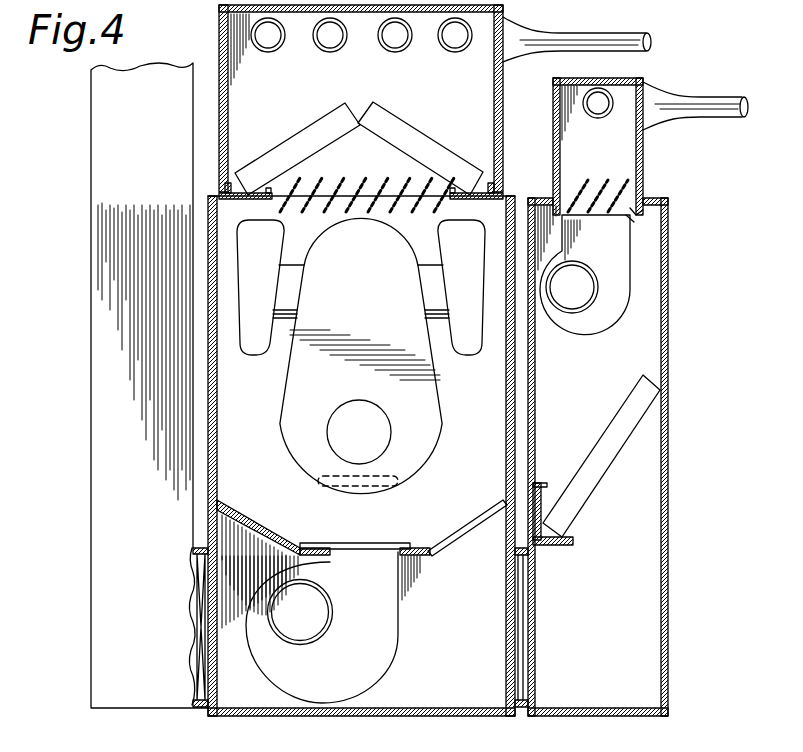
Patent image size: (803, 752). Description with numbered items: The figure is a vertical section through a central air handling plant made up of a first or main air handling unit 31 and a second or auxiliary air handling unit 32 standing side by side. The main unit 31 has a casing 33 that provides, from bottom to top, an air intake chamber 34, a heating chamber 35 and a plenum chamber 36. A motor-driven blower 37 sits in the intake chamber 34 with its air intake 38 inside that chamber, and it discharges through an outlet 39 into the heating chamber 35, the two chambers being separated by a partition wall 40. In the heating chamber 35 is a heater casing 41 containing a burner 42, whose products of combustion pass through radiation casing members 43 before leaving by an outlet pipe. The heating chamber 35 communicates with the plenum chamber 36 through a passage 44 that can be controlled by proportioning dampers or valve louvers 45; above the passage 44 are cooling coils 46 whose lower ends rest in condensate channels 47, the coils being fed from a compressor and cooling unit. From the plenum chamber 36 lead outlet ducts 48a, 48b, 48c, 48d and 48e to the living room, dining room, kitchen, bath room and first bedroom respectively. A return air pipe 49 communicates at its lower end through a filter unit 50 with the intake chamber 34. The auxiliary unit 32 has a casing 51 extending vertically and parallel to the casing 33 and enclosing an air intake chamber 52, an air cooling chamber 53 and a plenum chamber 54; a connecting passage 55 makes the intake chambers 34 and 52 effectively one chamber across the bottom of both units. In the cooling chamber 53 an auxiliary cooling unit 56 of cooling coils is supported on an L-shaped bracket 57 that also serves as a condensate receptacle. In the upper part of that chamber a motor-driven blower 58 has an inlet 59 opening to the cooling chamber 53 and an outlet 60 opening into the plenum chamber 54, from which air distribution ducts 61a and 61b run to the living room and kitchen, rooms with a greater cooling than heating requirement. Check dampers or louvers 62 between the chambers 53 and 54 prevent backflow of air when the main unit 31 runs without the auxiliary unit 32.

The main air handling unit 31 is at (421, 699).
The auxiliary air handling unit 32 is at (594, 716).
The casing 33 is at (215, 432).
The air intake chamber 34 is at (462, 614).
The heating chamber 35 is at (257, 413).
The plenum chamber 36 is at (380, 94).
The motor-driven blower 37 is at (385, 640).
The air intake 38 is at (298, 643).
The outlet 39 is at (358, 545).
The partition wall 40 is at (478, 532).
The heater casing 41 is at (428, 402).
The burner 42 is at (345, 487).
The radiation casing members 43 is at (248, 350).
The passage 44 is at (335, 210).
The proportioning dampers 45 is at (392, 184).
The cooling coils 46 is at (388, 125).
The condensate channels 47 is at (236, 198).
The outlet duct 48a is at (266, 53).
The outlet duct 48b is at (327, 53).
The outlet duct 48c is at (392, 53).
The outlet duct 48d is at (452, 53).
The outlet duct 48e is at (495, 46).
The return air pipe 49 is at (102, 520).
The filter unit 50 is at (205, 625).
The casing 51 is at (662, 517).
The air intake chamber 52 is at (615, 609).
The air cooling chamber 53 is at (608, 389).
The plenum chamber 54 is at (607, 155).
The connecting passage 55 is at (523, 645).
The auxiliary cooling unit 56 is at (607, 430).
The L-shaped bracket 57 is at (548, 548).
The motor-driven blower 58 is at (606, 312).
The inlet 59 is at (572, 312).
The outlet 60 is at (631, 213).
The air distribution duct 61a is at (598, 88).
The air distribution duct 61b is at (640, 125).
The check dampers 62 is at (625, 185).